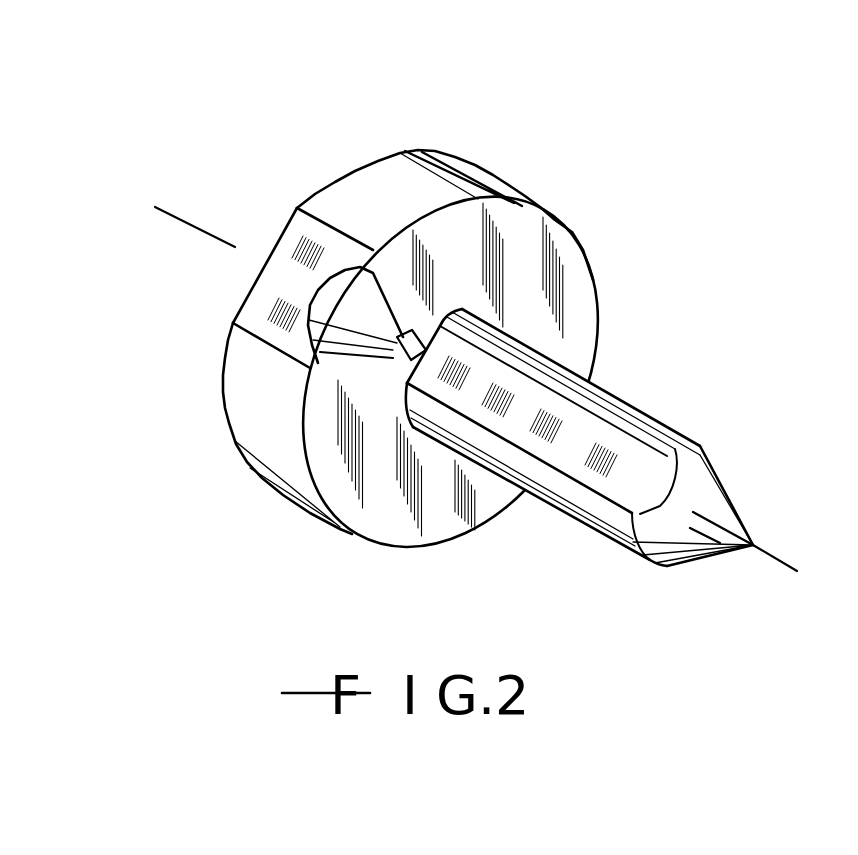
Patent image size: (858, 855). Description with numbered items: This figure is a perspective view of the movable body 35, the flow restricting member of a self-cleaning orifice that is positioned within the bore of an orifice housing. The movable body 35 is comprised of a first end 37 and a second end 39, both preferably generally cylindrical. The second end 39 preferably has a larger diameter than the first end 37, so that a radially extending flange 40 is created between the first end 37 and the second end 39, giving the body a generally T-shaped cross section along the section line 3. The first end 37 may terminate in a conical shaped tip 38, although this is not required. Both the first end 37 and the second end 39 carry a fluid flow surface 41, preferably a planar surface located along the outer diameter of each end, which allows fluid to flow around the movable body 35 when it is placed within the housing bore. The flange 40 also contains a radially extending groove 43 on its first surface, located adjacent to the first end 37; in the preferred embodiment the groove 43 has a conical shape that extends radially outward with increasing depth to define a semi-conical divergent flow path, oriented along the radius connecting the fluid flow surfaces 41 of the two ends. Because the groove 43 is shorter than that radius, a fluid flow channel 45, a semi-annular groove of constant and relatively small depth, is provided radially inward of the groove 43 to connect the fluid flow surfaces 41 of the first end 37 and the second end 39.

The movable body 35 is at (378, 125).
The first end 37 is at (542, 498).
The conical shaped tip 38 is at (714, 540).
The second end 39 is at (249, 408).
The radially extending flange 40 is at (375, 493).
The fluid flow surface 41 is at (266, 287).
The radially extending groove 43 is at (350, 310).
The fluid flow channel 45 is at (410, 340).
The section line of FIG. 3 is at (160, 233).